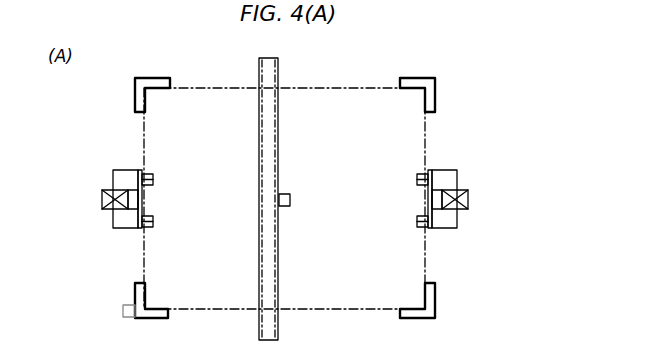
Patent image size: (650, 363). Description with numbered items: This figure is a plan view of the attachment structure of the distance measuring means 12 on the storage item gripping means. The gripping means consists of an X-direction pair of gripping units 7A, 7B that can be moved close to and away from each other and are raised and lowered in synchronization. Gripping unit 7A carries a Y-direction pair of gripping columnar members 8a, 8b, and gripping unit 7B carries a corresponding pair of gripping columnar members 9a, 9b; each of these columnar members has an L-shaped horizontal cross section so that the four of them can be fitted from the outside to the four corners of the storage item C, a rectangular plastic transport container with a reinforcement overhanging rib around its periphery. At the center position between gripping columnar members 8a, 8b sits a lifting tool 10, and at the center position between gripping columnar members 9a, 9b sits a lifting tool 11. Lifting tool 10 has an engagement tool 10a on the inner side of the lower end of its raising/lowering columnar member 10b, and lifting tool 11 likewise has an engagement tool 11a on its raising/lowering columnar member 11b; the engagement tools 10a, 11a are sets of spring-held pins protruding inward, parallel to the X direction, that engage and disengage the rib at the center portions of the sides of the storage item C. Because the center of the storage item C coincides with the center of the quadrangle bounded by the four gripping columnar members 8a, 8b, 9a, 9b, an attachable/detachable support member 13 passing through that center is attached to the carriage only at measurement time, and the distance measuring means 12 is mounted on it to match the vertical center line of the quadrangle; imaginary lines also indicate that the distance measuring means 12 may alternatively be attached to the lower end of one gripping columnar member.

The gripping unit 7A is at (158, 78).
The gripping unit 7B is at (414, 78).
The gripping columnar member 8a is at (136, 296).
The gripping columnar member 8b is at (136, 100).
The gripping columnar member 9a is at (436, 298).
The gripping columnar member 9b is at (435, 98).
The lifting tool 10 is at (121, 204).
The engagement tool 10a is at (149, 227).
The raising/lowering columnar member 10b is at (111, 190).
The lifting tool 11 is at (441, 200).
The engagement tool 11a is at (420, 227).
The raising/lowering columnar member 11b is at (459, 190).
The distance measuring means 12 is at (291, 200).
The support member 13 is at (260, 200).
The storage item C is at (316, 302).